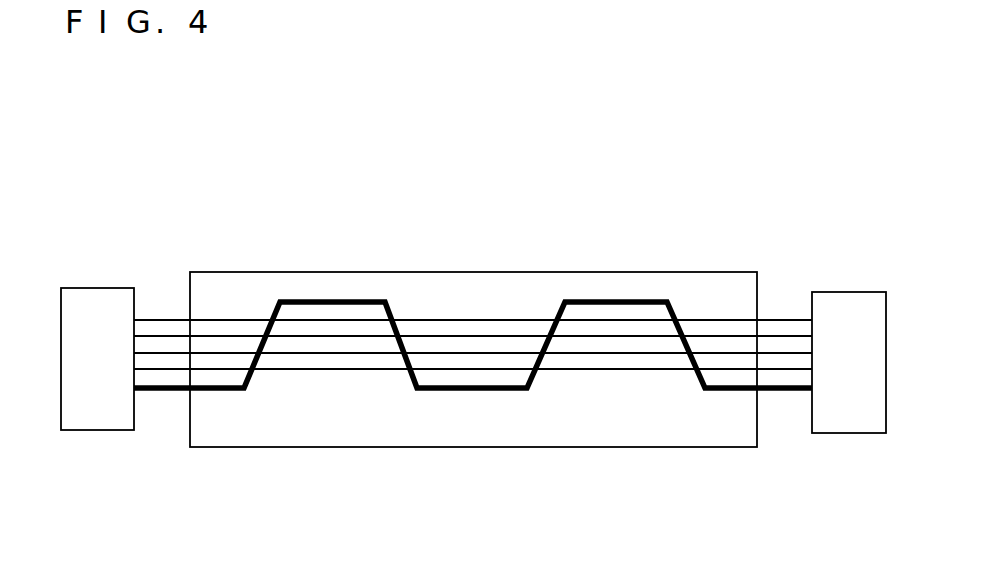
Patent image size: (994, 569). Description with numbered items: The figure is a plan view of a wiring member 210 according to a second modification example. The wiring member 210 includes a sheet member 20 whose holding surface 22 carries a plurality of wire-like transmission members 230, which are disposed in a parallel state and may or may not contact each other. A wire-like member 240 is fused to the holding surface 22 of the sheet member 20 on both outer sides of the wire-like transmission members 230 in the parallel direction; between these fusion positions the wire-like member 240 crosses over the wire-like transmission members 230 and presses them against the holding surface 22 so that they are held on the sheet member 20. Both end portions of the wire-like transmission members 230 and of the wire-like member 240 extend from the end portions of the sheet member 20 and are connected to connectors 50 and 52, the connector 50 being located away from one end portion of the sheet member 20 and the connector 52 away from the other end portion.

The connector 50 is at (98, 288).
The connector 52 is at (850, 292).
The wiring member 210 is at (477, 237).
The sheet member 20 is at (304, 272).
The holding surface 22 is at (218, 292).
The wire-like transmission member 230 is at (613, 384).
The wire-like member 240 is at (717, 394).